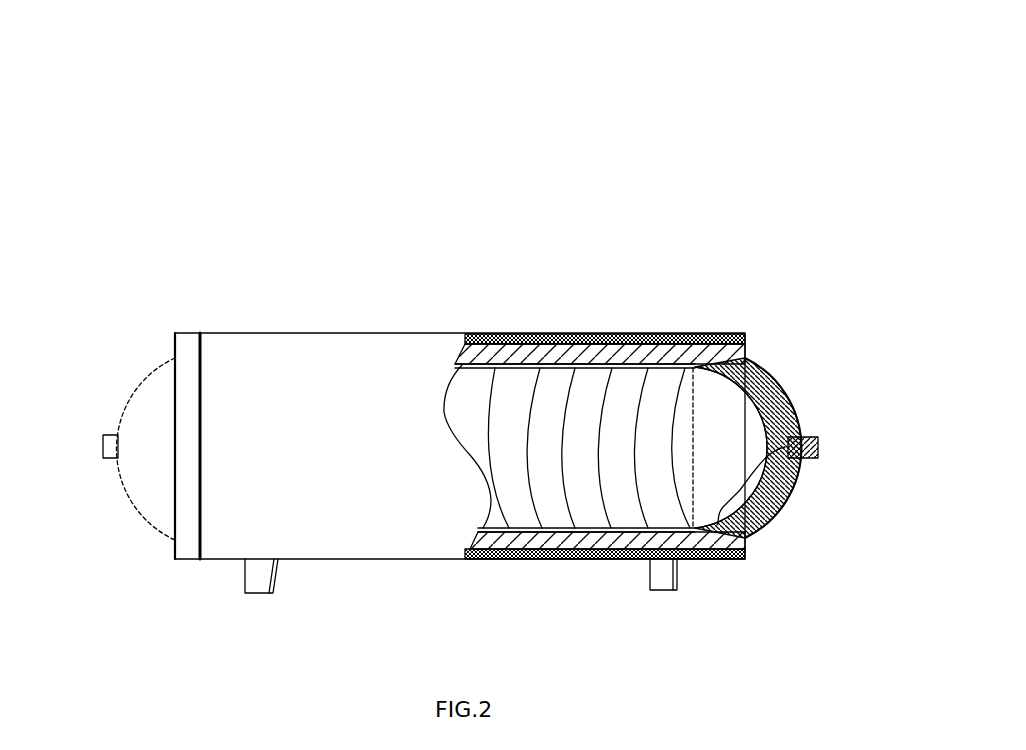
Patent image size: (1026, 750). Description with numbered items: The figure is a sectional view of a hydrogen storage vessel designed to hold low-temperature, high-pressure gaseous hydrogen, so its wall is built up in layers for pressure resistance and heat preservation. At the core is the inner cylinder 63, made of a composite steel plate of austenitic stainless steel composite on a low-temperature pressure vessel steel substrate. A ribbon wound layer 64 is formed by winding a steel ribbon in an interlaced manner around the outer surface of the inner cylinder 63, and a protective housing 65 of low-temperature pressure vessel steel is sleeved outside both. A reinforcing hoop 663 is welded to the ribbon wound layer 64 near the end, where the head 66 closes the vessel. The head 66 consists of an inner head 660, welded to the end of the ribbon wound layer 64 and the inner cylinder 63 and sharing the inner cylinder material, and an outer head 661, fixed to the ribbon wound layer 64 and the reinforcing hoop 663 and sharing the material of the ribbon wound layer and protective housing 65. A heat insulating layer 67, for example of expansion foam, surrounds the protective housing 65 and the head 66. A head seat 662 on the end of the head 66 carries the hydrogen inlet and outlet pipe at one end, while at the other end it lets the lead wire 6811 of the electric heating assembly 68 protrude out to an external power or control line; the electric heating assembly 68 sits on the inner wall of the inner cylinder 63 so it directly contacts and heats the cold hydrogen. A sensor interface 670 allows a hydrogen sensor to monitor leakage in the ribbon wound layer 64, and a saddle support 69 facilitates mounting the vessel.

The head 66 is at (778, 282).
The inner head 660 is at (780, 383).
The outer head 661 is at (742, 333).
The head seat 662 is at (97, 430).
The reinforcing hoop 663 is at (737, 560).
The lead wire 6811 is at (818, 447).
The heat insulating layer 67 is at (323, 380).
The electric heating assembly 68 is at (593, 450).
The saddle support 69 is at (247, 590).
The sensor interface 670 is at (700, 560).
The inner cylinder 63 is at (502, 335).
The ribbon wound layer 64 is at (573, 335).
The protective housing 65 is at (638, 335).